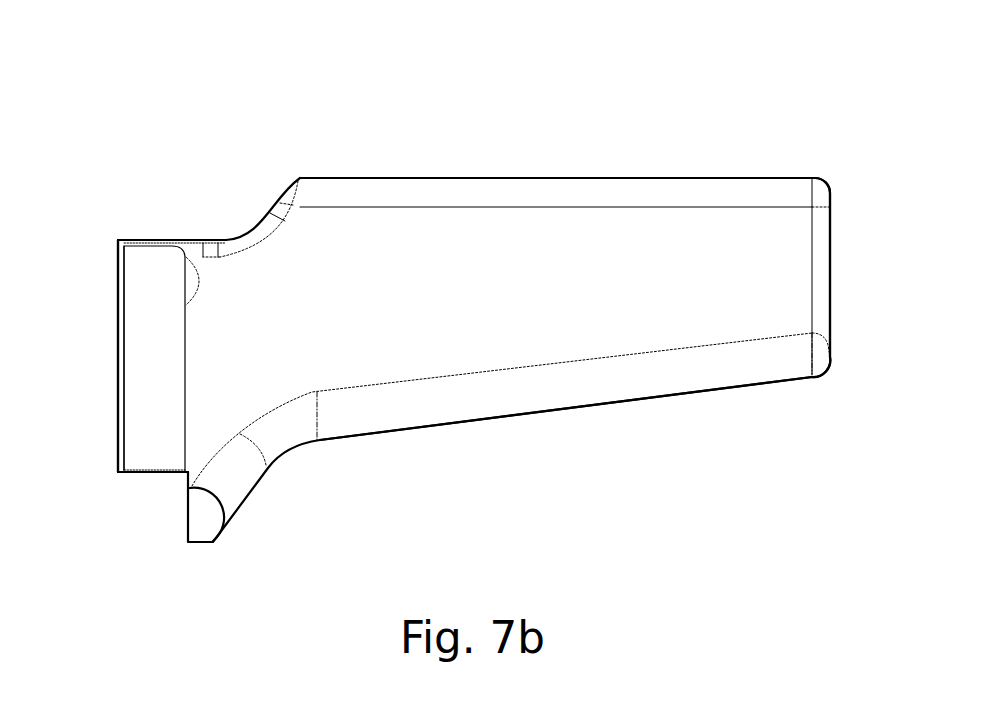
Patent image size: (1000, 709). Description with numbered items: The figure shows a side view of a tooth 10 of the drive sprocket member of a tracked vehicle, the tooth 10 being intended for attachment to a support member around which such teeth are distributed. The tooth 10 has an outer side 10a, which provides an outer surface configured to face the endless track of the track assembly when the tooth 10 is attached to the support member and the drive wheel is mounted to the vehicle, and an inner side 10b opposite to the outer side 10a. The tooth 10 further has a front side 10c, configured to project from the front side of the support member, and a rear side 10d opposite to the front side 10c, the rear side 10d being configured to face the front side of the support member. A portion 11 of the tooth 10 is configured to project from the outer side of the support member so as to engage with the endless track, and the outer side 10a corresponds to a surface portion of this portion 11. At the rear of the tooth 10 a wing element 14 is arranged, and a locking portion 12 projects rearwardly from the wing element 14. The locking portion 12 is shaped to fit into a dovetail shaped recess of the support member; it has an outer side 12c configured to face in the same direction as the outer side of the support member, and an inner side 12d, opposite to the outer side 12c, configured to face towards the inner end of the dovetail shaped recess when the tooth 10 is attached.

The tooth 10 is at (676, 107).
The outer side 10a is at (452, 178).
The inner side 10b is at (540, 412).
The front side 10c is at (830, 285).
The rear side 10d is at (117, 410).
The portion 11 is at (272, 186).
The locking portion 12 is at (110, 329).
The outer side 12c is at (138, 238).
The inner side 12d is at (155, 473).
The wing element 14 is at (253, 509).